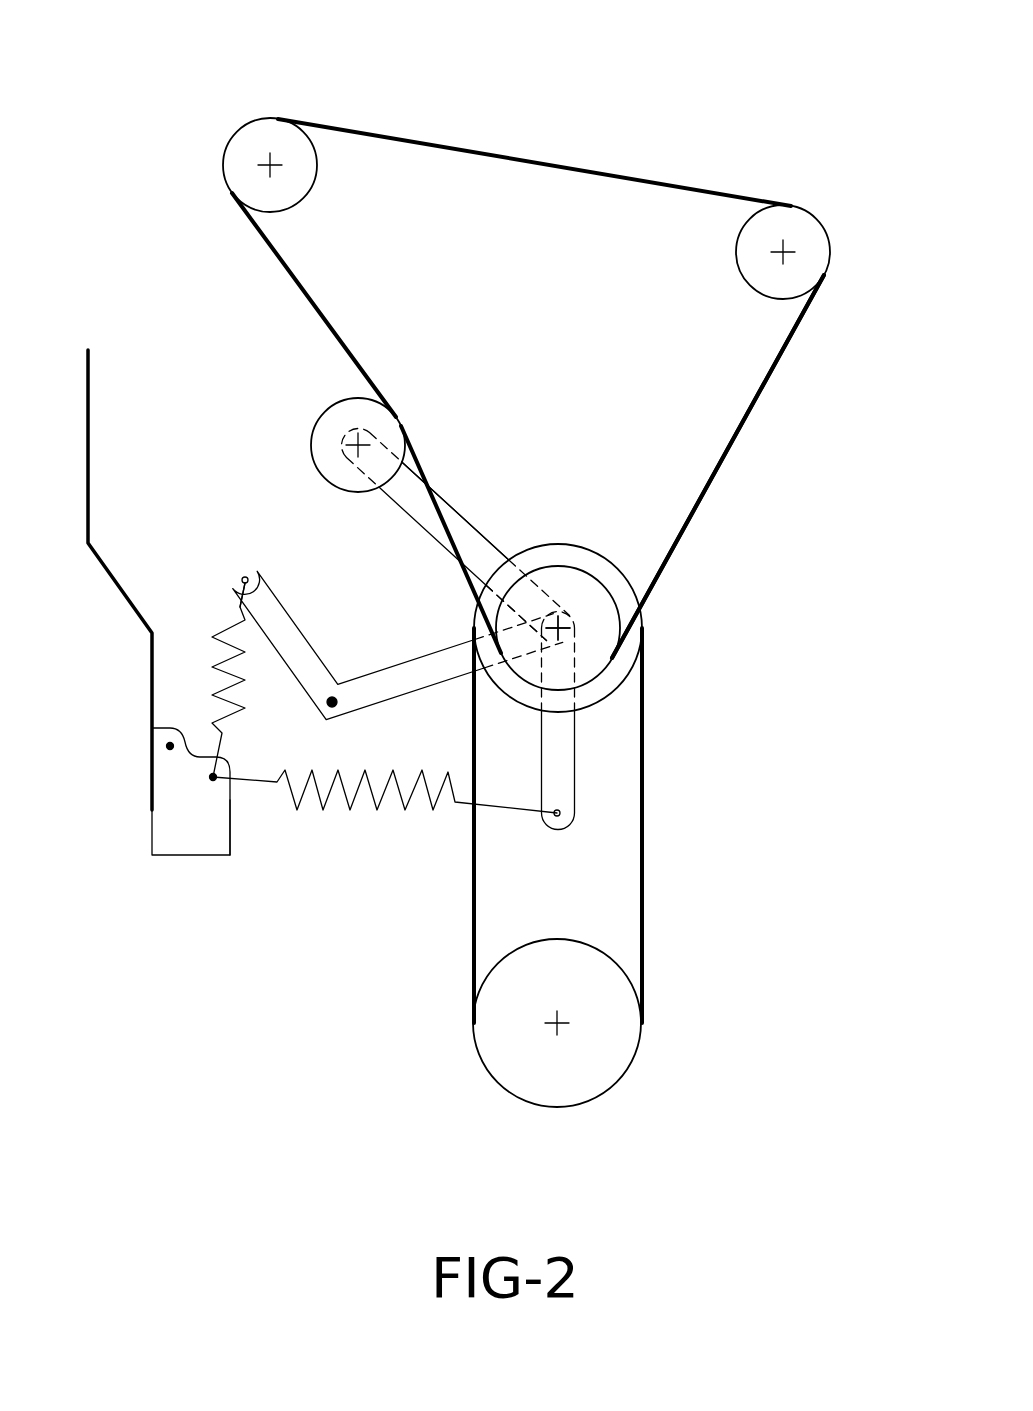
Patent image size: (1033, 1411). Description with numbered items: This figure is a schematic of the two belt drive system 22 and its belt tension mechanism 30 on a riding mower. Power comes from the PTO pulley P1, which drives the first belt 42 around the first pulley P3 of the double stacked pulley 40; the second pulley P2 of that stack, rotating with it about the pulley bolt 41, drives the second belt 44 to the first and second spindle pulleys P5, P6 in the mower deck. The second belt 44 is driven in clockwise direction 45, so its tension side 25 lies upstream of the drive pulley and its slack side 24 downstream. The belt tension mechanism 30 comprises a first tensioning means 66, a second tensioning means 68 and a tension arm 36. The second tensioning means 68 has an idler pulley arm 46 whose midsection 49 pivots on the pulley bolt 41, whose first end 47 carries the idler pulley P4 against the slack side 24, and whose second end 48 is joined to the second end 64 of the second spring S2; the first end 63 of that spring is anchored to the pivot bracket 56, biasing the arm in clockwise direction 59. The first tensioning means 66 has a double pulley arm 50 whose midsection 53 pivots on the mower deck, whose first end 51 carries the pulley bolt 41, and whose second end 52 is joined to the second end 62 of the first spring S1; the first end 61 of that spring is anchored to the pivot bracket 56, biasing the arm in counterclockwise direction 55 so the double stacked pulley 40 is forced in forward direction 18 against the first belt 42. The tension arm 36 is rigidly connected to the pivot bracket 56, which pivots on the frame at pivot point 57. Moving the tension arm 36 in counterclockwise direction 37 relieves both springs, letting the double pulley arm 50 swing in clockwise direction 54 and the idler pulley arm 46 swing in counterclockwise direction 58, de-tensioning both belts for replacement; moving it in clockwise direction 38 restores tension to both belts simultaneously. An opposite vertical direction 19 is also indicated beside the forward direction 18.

The forward direction 18 is at (572, 75).
The downward direction 19 is at (572, 248).
The belt drive system 22 is at (718, 563).
The slack side 24 is at (330, 322).
The tension side 25 is at (718, 480).
The belt tension mechanism 30 is at (646, 93).
The tension arm 36 is at (89, 355).
The counterclockwise direction 37 is at (35, 477).
The clockwise direction 38 is at (140, 477).
The double stacked pulley 40 is at (672, 645).
The pulley bolt 41 is at (600, 561).
The first belt 42 is at (644, 880).
The second belt 44 is at (755, 418).
The clockwise direction 45 is at (217, 115).
The idler pulley arm 46 is at (440, 496).
The first end 47 is at (386, 426).
The second end 48 is at (572, 821).
The midsection 49 is at (540, 546).
The double pulley arm 50 is at (292, 628).
The first end 51 is at (560, 640).
The second end 52 is at (243, 574).
The midsection 53 is at (332, 696).
The clockwise direction 54 is at (277, 701).
The counterclockwise direction 55 is at (392, 720).
The pivot bracket 56 is at (212, 851).
The pivot point 57 is at (168, 747).
The counterclockwise direction 58 is at (487, 508).
The clockwise direction 59 is at (650, 730).
The first end 61 is at (212, 771).
The second end 62 is at (238, 611).
The first end 63 is at (219, 818).
The second end 64 is at (541, 812).
The first tensioning means 66 is at (215, 580).
The second tensioning means 68 is at (395, 535).
The PTO pulley P1 is at (615, 1058).
The second pulley P2 is at (540, 677).
The first pulley P3 is at (620, 587).
The idler pulley P4 is at (325, 435).
The first spindle pulley P5 is at (265, 128).
The second spindle pulley P6 is at (800, 220).
The first spring S1 is at (226, 651).
The second spring S2 is at (405, 804).